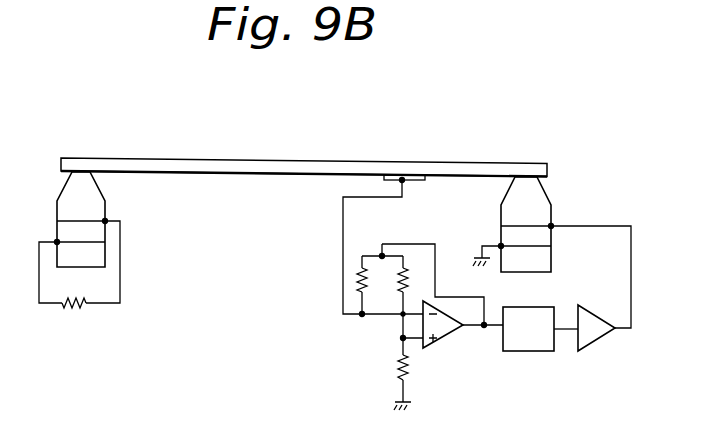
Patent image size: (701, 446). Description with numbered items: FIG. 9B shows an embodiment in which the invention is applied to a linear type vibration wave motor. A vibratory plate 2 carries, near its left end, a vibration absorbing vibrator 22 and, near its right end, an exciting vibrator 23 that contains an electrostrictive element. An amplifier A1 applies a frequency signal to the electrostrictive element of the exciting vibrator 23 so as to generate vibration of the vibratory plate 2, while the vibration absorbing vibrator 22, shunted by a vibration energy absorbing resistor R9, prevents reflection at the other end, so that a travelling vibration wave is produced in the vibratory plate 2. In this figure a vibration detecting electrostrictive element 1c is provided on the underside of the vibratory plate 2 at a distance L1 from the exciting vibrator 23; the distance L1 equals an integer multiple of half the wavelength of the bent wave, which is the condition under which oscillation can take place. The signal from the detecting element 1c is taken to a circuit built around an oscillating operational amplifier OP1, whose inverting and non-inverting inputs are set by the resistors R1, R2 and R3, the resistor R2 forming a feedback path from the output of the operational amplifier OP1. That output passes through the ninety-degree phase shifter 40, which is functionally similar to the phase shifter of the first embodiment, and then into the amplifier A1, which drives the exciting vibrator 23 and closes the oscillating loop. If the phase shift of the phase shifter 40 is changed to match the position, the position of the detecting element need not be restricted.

The vibratory plate 2 is at (548, 169).
The vibration detecting electrostrictive element 1c is at (426, 181).
The vibration absorbing vibrator 22 is at (108, 209).
The exciting vibrator 23 is at (553, 210).
The distance from the vibrator 23 to the vibration detecting electrostrictive elemen L1 is at (528, 160).
The vibration energy absorbing resistor R9 is at (73, 306).
The resistor R1 is at (383, 279).
The resistor R2 is at (410, 275).
The resistor R3 is at (408, 366).
The oscillating operational amplifier OP1 is at (450, 343).
The phase shifter 40 is at (528, 352).
The amplifier A1 is at (598, 343).